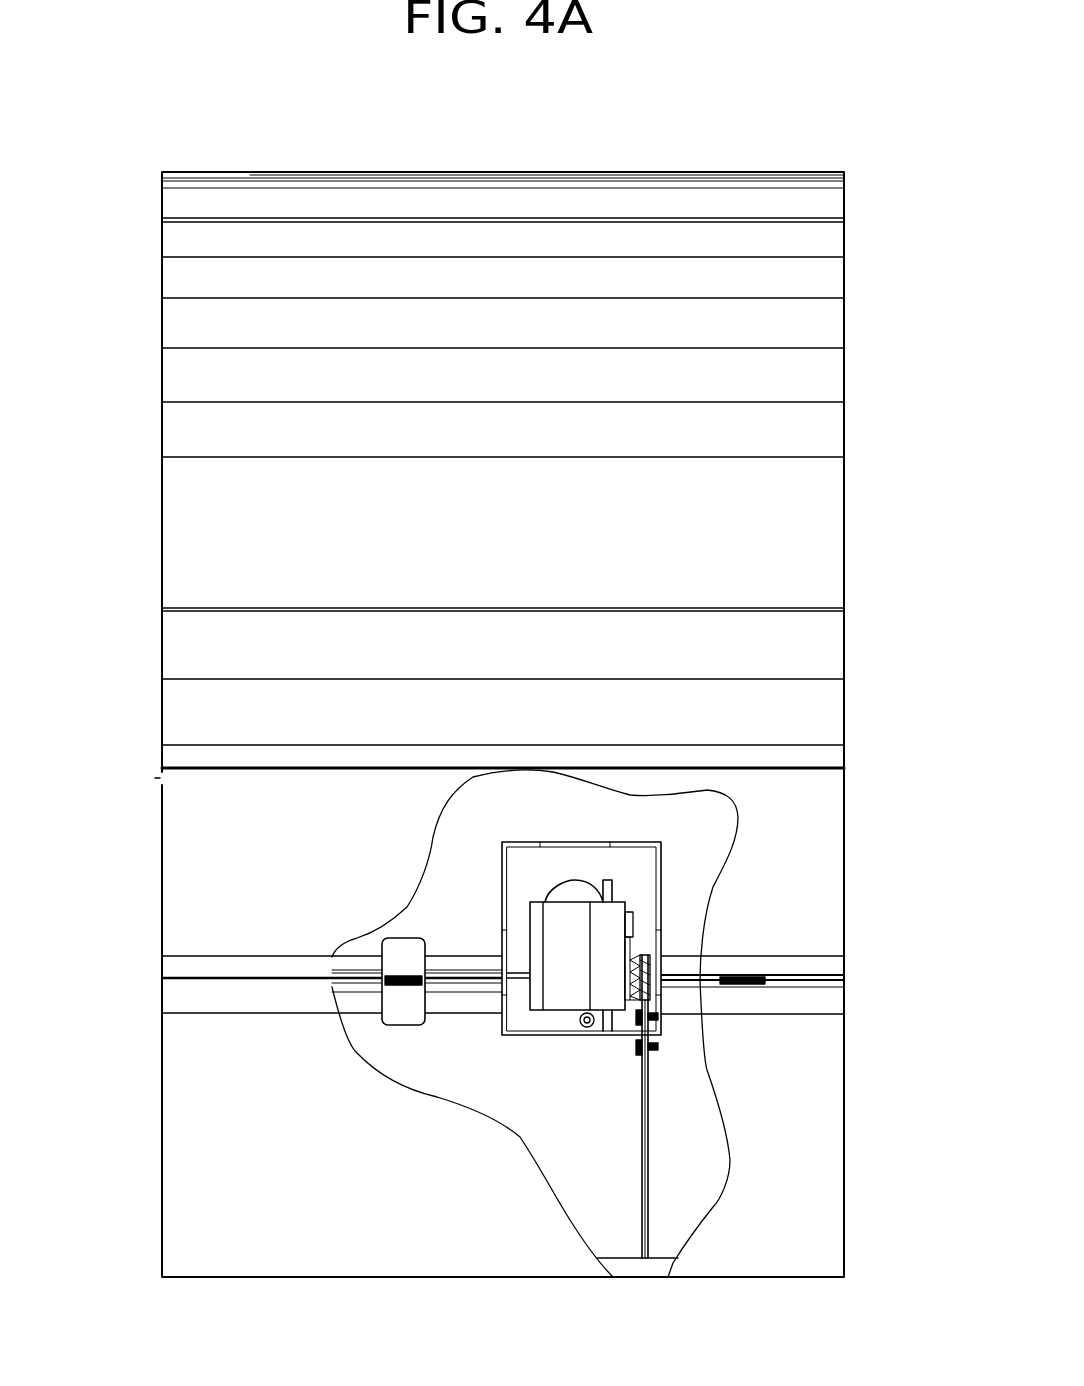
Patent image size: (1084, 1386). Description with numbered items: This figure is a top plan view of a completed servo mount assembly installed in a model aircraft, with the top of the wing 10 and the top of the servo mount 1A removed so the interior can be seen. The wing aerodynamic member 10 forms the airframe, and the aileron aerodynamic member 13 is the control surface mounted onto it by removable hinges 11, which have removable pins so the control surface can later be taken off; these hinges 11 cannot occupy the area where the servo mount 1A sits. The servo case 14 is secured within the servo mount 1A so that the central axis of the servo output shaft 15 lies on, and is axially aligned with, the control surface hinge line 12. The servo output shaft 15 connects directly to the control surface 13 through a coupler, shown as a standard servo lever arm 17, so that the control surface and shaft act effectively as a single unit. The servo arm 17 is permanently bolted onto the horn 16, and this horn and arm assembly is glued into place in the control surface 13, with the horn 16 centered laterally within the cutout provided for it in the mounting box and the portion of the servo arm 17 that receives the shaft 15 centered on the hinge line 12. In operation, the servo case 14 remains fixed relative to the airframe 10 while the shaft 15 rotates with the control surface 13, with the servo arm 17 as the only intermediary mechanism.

The wing aerodynamic member 10 is at (308, 527).
The removable hinges 11 is at (405, 1008).
The servo mount 1A is at (523, 1022).
The control surface hinge line 12 is at (160, 980).
The aileron aerodynamic member 13 is at (293, 1202).
The servo case 14 is at (570, 987).
The servo output shaft 15 is at (657, 983).
The horn 16 is at (633, 1260).
The servo lever arm 17 is at (657, 1035).